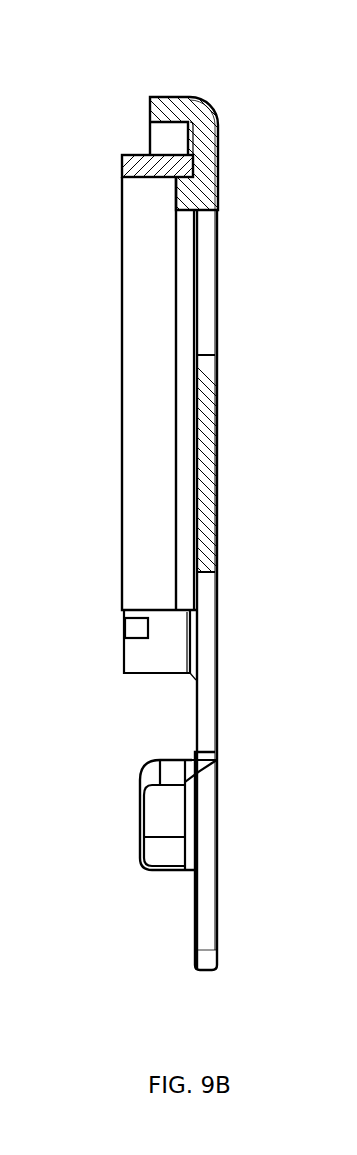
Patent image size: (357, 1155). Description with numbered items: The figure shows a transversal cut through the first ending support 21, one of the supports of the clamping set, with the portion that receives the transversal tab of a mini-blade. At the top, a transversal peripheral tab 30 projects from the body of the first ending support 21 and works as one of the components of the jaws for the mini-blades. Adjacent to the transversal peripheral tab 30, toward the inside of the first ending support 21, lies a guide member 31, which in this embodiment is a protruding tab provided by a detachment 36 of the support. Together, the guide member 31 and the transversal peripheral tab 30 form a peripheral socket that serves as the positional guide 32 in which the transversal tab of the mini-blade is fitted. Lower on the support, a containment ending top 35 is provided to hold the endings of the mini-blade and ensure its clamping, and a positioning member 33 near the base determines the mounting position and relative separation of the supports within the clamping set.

The transversal peripheral tab 30 is at (168, 97).
The positional guide 32 is at (175, 138).
The guide members 31 is at (122, 168).
The detachment 36 is at (176, 212).
The first ending support 21 is at (220, 488).
The ending tops 35 is at (131, 621).
The positioning members 33 is at (162, 810).